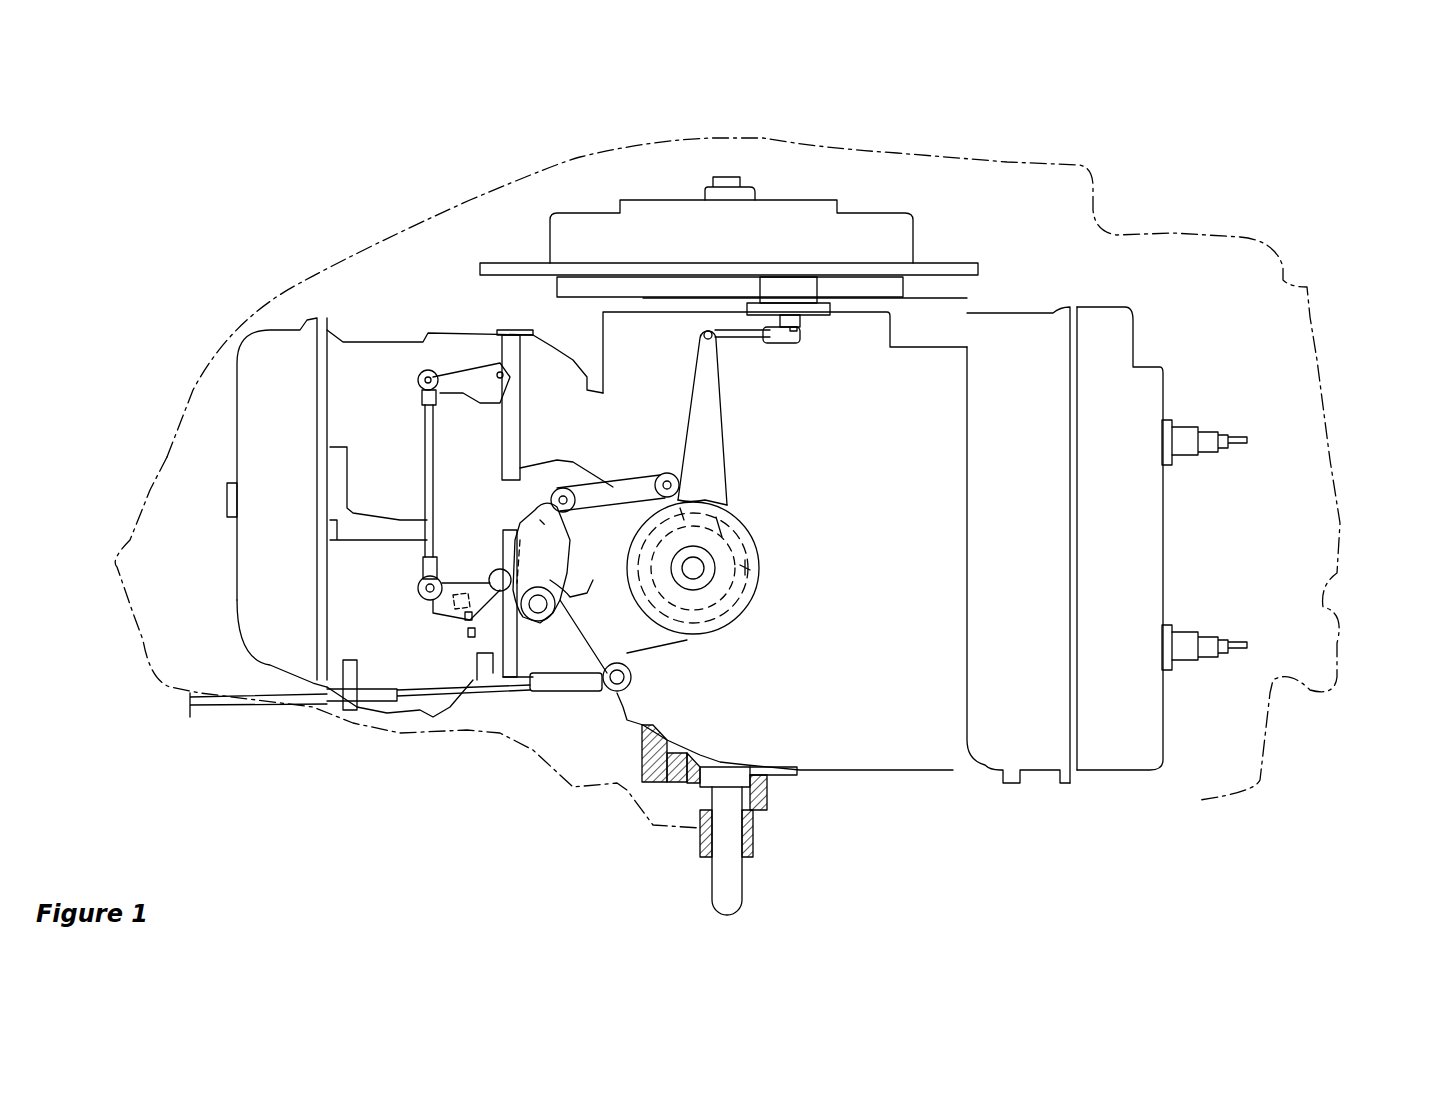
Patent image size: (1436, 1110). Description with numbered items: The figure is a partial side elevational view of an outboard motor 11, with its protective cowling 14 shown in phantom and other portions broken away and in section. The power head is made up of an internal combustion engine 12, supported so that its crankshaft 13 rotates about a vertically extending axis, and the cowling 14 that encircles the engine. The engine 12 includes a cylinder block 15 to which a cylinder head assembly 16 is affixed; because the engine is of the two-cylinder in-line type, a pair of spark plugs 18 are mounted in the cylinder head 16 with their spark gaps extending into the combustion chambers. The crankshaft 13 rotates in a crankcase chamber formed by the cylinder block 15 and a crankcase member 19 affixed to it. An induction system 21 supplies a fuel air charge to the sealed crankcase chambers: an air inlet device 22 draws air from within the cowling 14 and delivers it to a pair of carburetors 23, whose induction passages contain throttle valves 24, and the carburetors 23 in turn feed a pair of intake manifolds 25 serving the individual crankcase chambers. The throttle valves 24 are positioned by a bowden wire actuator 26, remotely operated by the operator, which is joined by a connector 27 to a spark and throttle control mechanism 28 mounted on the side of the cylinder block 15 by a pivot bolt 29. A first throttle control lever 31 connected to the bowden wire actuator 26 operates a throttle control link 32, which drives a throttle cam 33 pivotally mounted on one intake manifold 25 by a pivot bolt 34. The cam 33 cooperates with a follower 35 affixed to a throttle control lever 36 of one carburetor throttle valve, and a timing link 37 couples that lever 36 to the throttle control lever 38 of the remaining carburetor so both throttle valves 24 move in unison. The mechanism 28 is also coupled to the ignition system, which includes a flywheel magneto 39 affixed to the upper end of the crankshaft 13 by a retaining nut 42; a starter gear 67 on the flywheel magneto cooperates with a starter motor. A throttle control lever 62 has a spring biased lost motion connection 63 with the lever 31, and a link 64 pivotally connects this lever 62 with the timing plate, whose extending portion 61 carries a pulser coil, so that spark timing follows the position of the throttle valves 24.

The outboard motor 11 is at (1118, 143).
The internal combustion engine 12 is at (950, 310).
The crankshaft 13 is at (723, 778).
The protective cowling 14 is at (1322, 387).
The cylinder block 15 is at (890, 758).
The cylinder head assembly 16 is at (1057, 310).
The spark plugs 18 is at (1203, 433).
The crankcase member 19 is at (643, 750).
The induction system 21 is at (220, 357).
The air inlet device 22 is at (237, 398).
The carburetors 23 is at (367, 340).
The throttle valves 24 is at (463, 630).
The intake manifolds 25 is at (560, 345).
The bowden wire actuator 26 is at (480, 687).
The connector 27 is at (568, 693).
The spark and throttle control mechanism 28 is at (786, 513).
The pivot bolt 29 is at (697, 590).
The first throttle control lever 31 is at (710, 637).
The throttle control link 32 is at (600, 478).
The throttle cam 33 is at (585, 600).
The pivot bolt 34 is at (547, 620).
The follower 35 is at (500, 573).
The throttle control lever 36 is at (430, 608).
The timing link 37 is at (423, 448).
The throttle control lever 38 is at (467, 370).
The flywheel magneto 39 is at (890, 217).
The retaining nut 42 is at (700, 187).
The extending portion 61 is at (820, 313).
The throttle control lever 62 is at (713, 432).
The spring biased lost motion connection 63 is at (727, 568).
The link 64 is at (740, 340).
The starter gear 67 is at (963, 262).